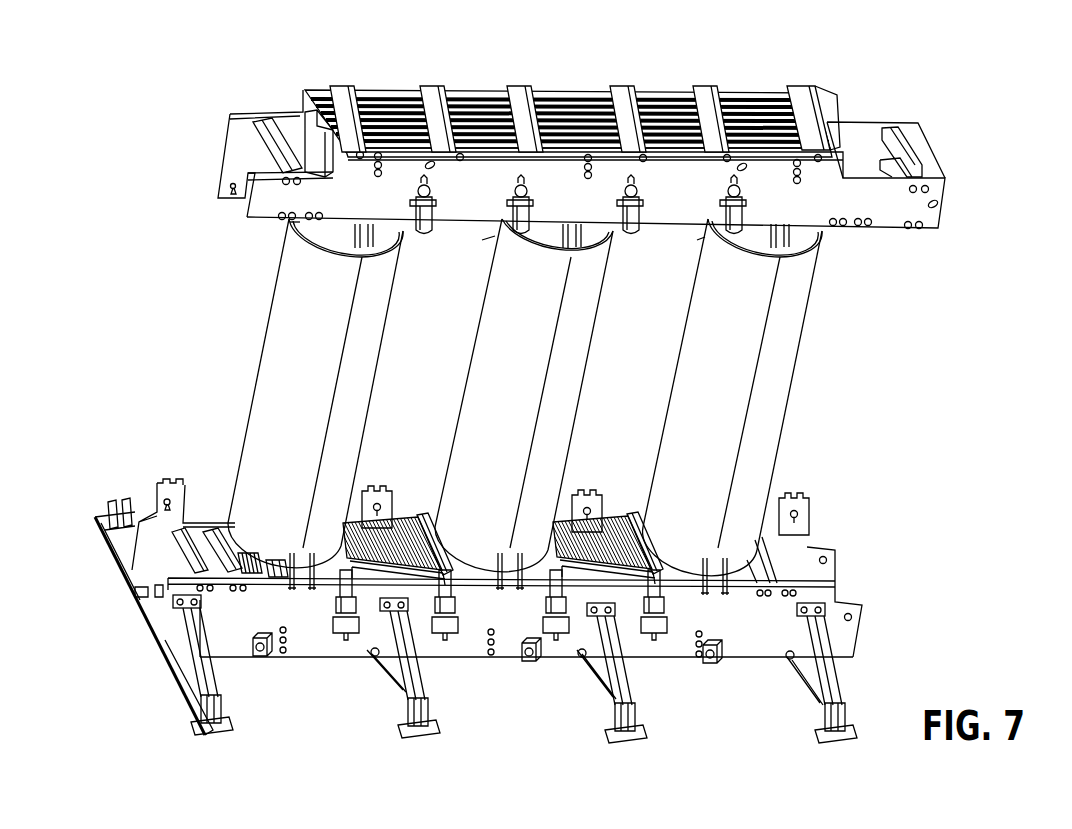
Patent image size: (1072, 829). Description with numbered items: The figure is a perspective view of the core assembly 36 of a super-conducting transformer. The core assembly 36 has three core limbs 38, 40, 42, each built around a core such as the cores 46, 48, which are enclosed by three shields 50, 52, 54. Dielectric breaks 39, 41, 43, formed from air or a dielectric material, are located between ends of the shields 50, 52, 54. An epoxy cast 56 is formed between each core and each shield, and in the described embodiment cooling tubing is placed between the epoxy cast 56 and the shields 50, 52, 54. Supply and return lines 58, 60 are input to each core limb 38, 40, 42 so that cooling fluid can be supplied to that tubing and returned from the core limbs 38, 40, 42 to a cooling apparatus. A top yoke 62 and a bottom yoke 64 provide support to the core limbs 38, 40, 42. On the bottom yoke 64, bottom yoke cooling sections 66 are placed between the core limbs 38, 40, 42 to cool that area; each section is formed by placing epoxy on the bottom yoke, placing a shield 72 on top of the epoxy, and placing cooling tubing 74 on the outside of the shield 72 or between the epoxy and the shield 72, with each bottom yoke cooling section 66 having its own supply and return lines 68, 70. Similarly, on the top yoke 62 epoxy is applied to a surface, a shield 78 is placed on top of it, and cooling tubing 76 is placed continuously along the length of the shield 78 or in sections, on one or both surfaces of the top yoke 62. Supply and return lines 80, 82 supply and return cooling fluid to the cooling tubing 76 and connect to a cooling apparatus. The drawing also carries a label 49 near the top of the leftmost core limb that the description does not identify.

The core assembly 36 is at (905, 73).
The core limb 38 is at (253, 397).
The dielectric break 39 is at (322, 448).
The core limb 40 is at (462, 400).
The dielectric break 41 is at (530, 450).
The core limb 42 is at (667, 410).
The dielectric break 43 is at (747, 433).
The core 46 is at (482, 240).
The core 48 is at (697, 240).
The retaining strap 49 is at (290, 223).
The shield 50 is at (287, 325).
The shield 52 is at (493, 343).
The shield 54 is at (693, 350).
The epoxy cast 56 is at (325, 222).
The supply line 58 is at (283, 628).
The return line 60 is at (272, 598).
The top yoke 62 is at (393, 84).
The bottom yoke 64 is at (232, 660).
The bottom yoke cooling section 66 is at (367, 565).
The supply line 68 is at (403, 565).
The return line 70 is at (457, 595).
The shield 72 is at (364, 652).
The cooling tubing 74 is at (395, 522).
The cooling tubing 76 is at (625, 92).
The shield 78 is at (777, 92).
The supply line 80 is at (365, 125).
The return line 82 is at (357, 123).